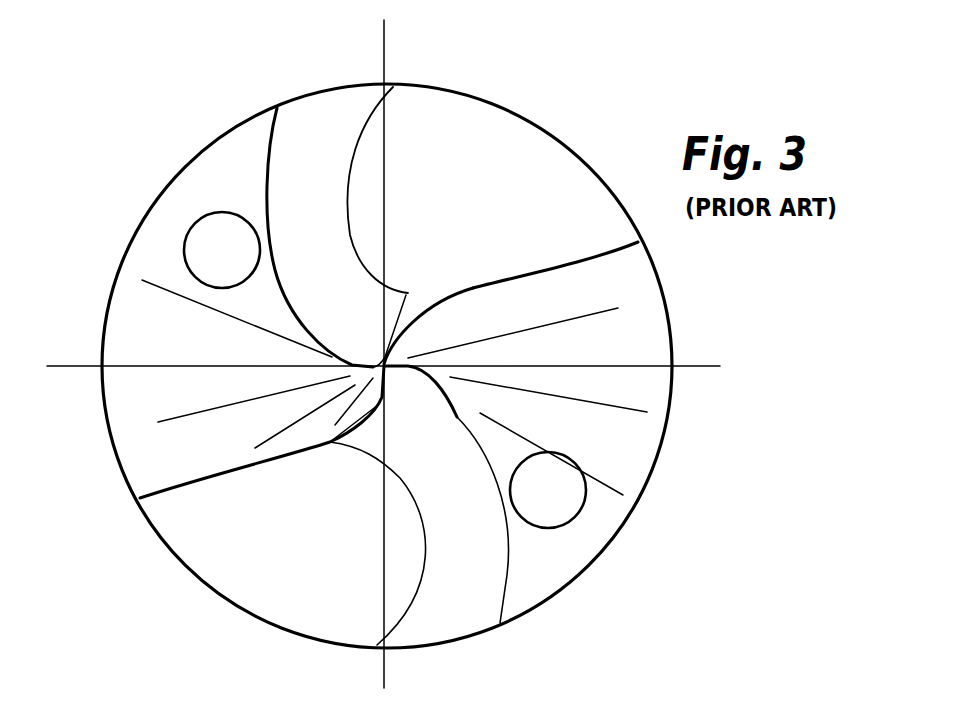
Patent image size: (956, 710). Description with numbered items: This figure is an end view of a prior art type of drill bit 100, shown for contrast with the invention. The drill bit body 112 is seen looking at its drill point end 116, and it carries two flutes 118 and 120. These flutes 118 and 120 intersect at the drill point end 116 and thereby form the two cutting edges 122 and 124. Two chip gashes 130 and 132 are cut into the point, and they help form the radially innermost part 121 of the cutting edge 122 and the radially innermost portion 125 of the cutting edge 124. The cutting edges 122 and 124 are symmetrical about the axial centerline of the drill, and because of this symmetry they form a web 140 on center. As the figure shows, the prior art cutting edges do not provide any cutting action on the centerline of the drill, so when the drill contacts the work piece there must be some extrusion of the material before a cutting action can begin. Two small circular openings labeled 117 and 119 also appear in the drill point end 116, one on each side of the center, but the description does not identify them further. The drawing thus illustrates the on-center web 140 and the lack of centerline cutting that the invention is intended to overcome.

The drill bit 100 is at (482, 98).
The drill bit body 112 is at (220, 140).
The drill point end 116 is at (137, 332).
The coolant hole 117 is at (205, 218).
The flute 118 is at (517, 152).
The coolant hole 119 is at (572, 512).
The flute 120 is at (237, 548).
The radially innermost part of the cutting edge 121 is at (380, 352).
The cutting edge 122 is at (478, 285).
The cutting edge 124 is at (302, 452).
The radially innermost portion of cutting edge 125 is at (333, 443).
The chip gash 130 is at (308, 152).
The chip gash 132 is at (463, 618).
The web 140 is at (407, 342).